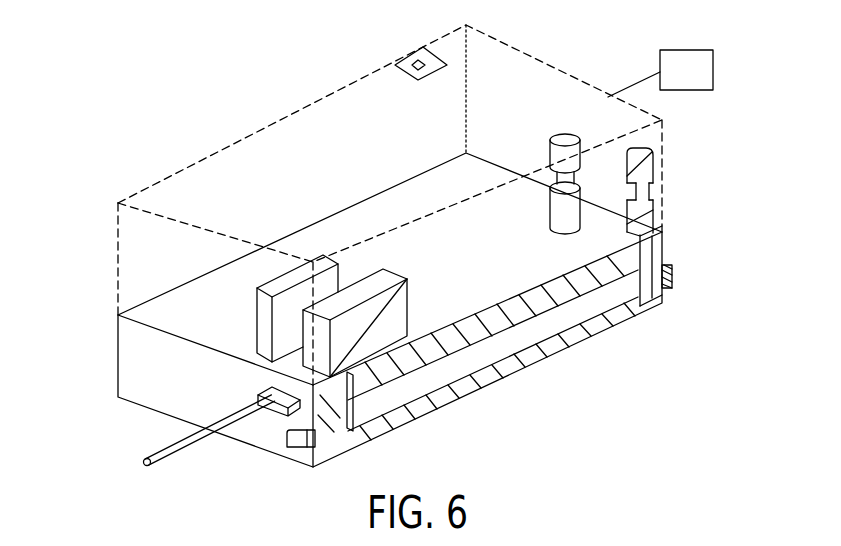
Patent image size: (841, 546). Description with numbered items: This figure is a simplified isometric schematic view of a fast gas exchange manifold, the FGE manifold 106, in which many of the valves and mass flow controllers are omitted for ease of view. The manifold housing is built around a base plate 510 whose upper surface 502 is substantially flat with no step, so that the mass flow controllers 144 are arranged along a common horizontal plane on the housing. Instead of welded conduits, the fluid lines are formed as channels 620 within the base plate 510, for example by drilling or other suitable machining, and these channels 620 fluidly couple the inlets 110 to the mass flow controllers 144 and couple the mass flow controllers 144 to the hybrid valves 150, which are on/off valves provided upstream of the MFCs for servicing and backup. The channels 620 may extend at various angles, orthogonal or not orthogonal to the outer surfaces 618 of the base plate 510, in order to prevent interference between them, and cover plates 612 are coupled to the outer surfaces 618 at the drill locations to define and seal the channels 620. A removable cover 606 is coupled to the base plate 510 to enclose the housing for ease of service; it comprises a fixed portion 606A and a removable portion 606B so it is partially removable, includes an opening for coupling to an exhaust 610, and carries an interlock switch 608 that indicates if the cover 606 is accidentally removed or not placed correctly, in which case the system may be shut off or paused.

The FGE manifold 106 is at (82, 134).
The inlets 110 is at (307, 446).
The mass flow controllers 144 is at (328, 256).
The hybrid valves 150 is at (532, 207).
The upper surface 502 is at (160, 313).
The base plate 510 is at (153, 398).
The removable cover 606 is at (312, 103).
The fixed portion 606A is at (231, 172).
The removable portion 606B is at (545, 88).
The interlock switch 608 is at (397, 57).
The exhaust 610 is at (715, 70).
The cover plates 612 is at (287, 438).
The outer surfaces 618 is at (663, 244).
The channels 620 is at (330, 437).